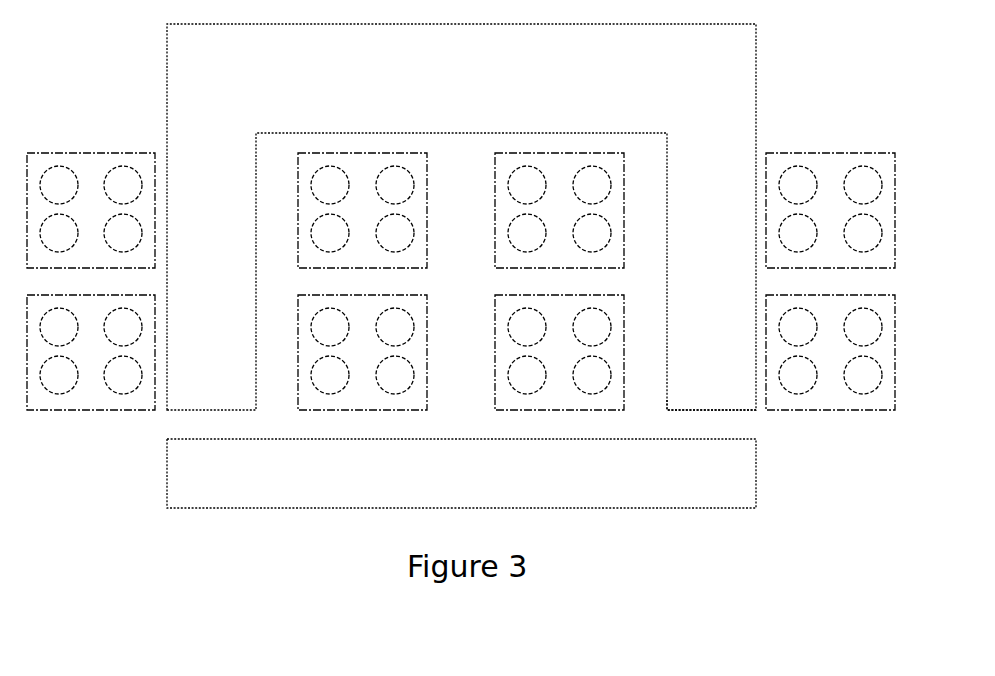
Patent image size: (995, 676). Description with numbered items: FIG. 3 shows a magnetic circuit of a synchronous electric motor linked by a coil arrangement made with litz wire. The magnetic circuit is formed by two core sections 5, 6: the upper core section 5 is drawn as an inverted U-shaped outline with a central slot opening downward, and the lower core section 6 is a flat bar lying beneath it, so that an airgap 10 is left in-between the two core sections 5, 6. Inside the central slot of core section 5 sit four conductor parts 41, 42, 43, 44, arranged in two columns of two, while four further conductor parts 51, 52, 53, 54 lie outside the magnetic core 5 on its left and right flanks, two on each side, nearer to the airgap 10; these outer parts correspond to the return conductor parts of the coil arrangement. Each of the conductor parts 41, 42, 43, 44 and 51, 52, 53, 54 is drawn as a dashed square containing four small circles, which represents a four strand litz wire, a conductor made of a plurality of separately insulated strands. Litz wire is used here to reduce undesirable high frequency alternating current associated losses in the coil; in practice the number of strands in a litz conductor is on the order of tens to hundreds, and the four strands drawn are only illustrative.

The core section 5 is at (183, 49).
The core section 6 is at (183, 498).
The airgap 10 is at (640, 427).
The conductor part 41 is at (362, 183).
The conductor part 42 is at (362, 380).
The conductor part 43 is at (559, 183).
The conductor part 44 is at (559, 380).
The conductor part 51 is at (91, 183).
The conductor part 52 is at (91, 380).
The conductor part 53 is at (830, 183).
The conductor part 54 is at (829, 380).